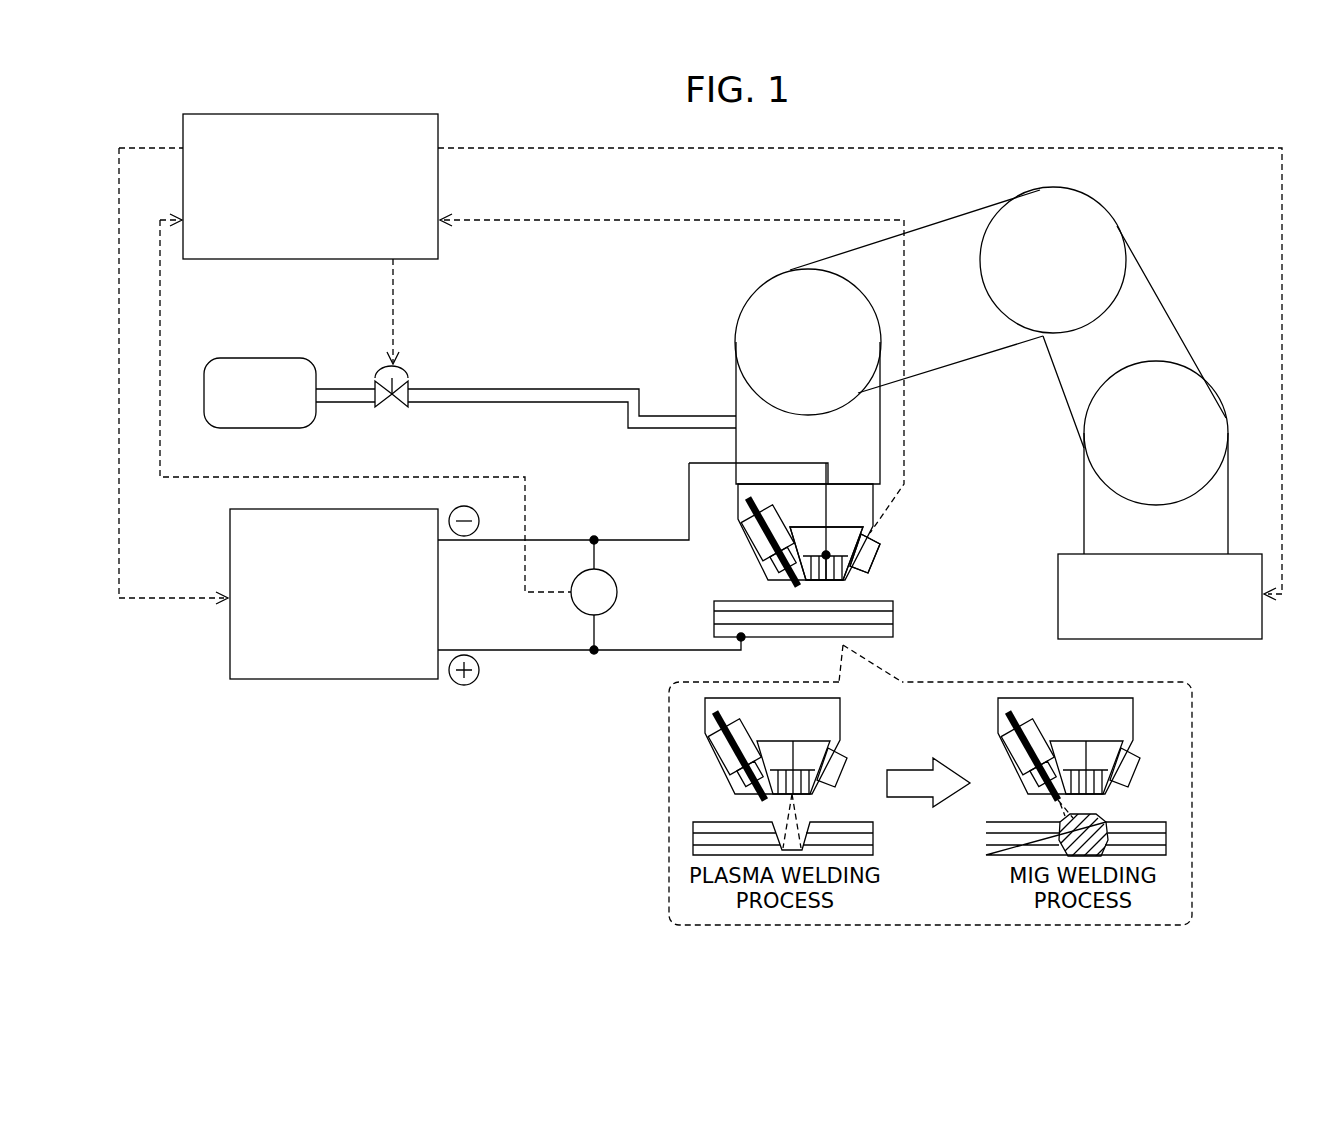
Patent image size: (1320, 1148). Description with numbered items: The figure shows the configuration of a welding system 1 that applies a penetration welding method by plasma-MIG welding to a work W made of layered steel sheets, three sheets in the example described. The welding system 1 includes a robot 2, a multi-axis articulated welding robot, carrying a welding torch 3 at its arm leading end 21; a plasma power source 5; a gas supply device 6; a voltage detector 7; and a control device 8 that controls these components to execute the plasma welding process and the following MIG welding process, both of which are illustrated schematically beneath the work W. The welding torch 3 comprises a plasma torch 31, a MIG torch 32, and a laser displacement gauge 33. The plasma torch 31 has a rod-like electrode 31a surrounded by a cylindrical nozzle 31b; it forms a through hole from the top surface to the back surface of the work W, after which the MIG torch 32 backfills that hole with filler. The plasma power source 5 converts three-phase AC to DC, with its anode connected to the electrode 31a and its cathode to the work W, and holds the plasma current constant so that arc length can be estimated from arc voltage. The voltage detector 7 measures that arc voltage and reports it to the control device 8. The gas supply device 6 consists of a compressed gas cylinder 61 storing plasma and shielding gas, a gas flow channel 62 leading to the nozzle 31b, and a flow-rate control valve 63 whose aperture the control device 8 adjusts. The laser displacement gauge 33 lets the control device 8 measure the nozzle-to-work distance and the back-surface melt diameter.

The welding system 1 is at (989, 128).
The robot 2 is at (1140, 288).
The welding torch 3 is at (923, 624).
The plasma power source 5 is at (438, 578).
The gas supply device 6 is at (470, 347).
The voltage detector 7 is at (612, 581).
The control device 8 is at (438, 122).
The arm leading end 21 is at (846, 502).
The plasma torch 31 is at (857, 521).
The electrode 31a is at (862, 530).
The nozzle 31b is at (837, 574).
The MIG torch 32 is at (765, 543).
The laser displacement gauge 33 is at (872, 548).
The compressed gas cylinder 61 is at (290, 357).
The gas flow channel 62 is at (482, 390).
The flow-rate control valve 63 is at (408, 372).
The work W is at (893, 612).